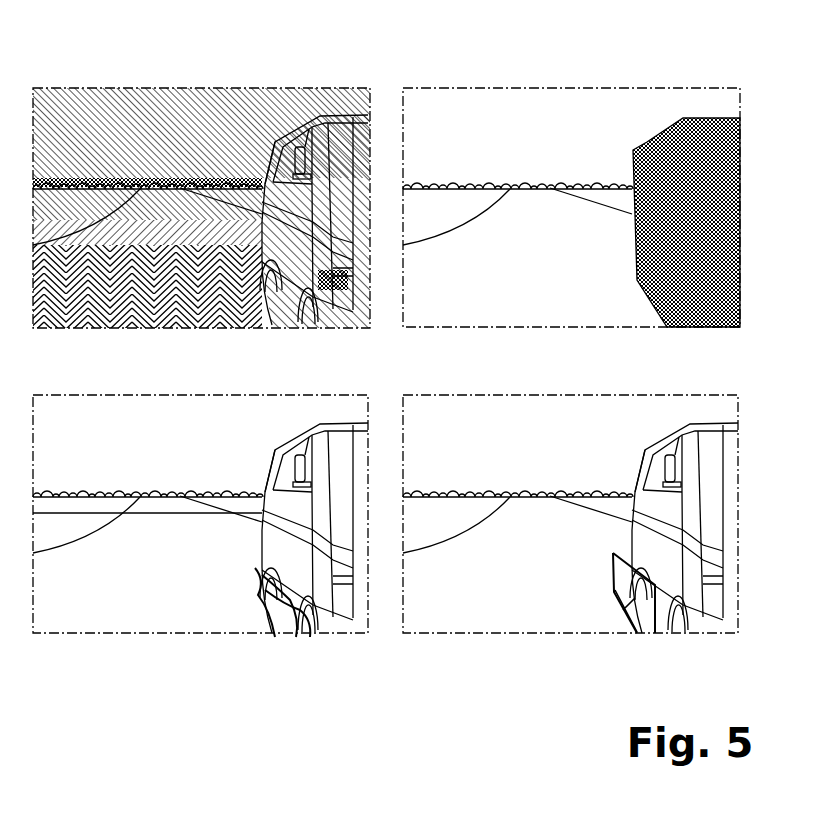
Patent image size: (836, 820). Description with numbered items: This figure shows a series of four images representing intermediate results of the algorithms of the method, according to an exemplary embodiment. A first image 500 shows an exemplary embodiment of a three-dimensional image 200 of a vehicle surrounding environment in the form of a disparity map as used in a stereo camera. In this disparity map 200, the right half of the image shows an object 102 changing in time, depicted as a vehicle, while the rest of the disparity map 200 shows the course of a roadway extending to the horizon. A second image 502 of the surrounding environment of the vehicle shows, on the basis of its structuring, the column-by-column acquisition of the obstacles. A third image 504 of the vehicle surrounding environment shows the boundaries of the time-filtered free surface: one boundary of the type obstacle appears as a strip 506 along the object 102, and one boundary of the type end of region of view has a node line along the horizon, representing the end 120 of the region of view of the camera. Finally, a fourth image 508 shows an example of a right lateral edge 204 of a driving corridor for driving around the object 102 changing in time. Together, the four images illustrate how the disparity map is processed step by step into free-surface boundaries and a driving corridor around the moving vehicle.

The first image 500 is at (385, 338).
The three-dimensional image 200 is at (230, 88).
The object 102 is at (350, 305).
The second image 502 is at (530, 68).
The third image 504 is at (200, 559).
The end of the region of view 120 is at (165, 515).
The strip 506 is at (272, 620).
The fourth image 508 is at (570, 559).
The right lateral edge 204 is at (620, 605).